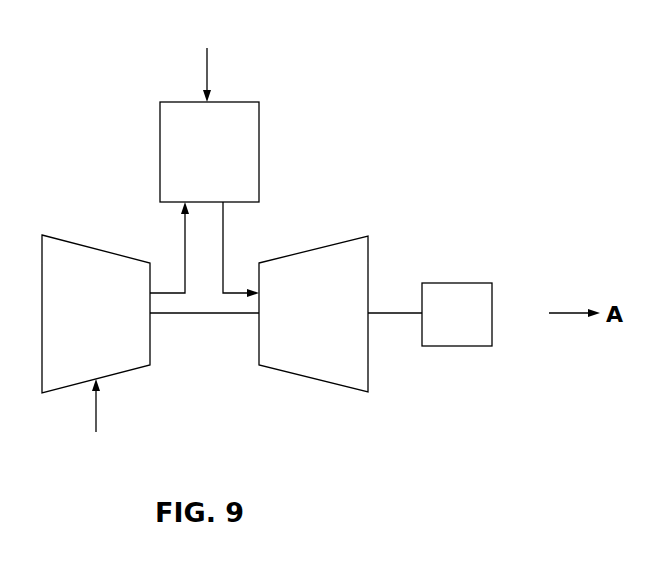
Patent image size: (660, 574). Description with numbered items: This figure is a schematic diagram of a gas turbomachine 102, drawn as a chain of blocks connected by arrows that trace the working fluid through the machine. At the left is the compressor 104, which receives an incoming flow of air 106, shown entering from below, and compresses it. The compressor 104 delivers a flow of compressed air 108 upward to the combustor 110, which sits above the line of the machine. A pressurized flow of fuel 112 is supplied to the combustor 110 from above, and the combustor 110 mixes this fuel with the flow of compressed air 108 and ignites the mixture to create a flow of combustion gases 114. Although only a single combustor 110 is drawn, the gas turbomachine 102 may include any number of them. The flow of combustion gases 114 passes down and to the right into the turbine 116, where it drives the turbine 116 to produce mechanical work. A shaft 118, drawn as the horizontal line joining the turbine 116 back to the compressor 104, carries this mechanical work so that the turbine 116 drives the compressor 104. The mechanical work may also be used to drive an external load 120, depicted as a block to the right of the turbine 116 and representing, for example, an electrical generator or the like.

The gas turbomachine 102 is at (80, 119).
The compressor 104 is at (110, 328).
The flow of air 106 is at (97, 408).
The flow of compressed air 108 is at (183, 258).
The combustor 110 is at (226, 164).
The pressurized flow of fuel 112 is at (207, 72).
The flow of combustion gases 114 is at (225, 259).
The turbine 116 is at (331, 325).
The shaft 118 is at (213, 314).
The external load 120 is at (475, 325).